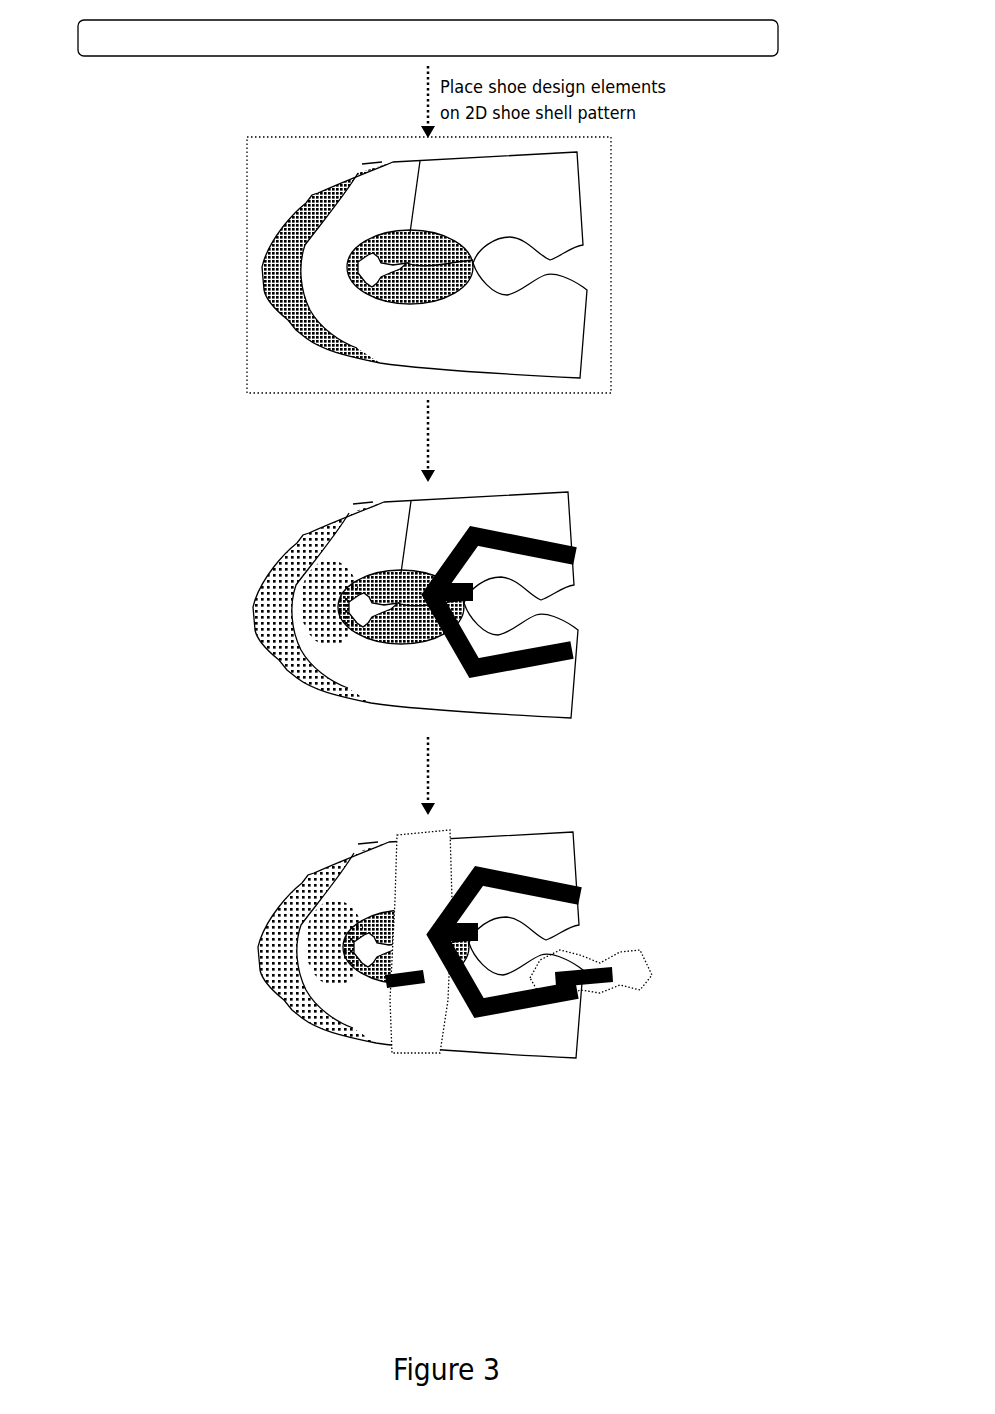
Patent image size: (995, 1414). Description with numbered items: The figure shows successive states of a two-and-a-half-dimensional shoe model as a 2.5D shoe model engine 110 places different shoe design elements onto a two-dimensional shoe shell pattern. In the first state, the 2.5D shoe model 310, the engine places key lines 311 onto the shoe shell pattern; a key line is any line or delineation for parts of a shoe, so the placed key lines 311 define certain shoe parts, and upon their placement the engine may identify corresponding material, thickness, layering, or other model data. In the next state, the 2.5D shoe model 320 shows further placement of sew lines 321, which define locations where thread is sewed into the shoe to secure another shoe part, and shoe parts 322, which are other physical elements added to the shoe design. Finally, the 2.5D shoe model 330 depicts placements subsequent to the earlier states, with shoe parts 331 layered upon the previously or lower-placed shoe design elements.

The 2.5D shoe model engine 110 is at (766, 48).
The 2.5D shoe model 310 is at (540, 378).
The key lines 311 is at (308, 291).
The 2.5D shoe model 320 is at (538, 720).
The sew lines 321 is at (296, 613).
The shoe parts 322 is at (574, 645).
The 2.5D shoe model 330 is at (541, 1057).
The shoe parts 331 is at (418, 1016).